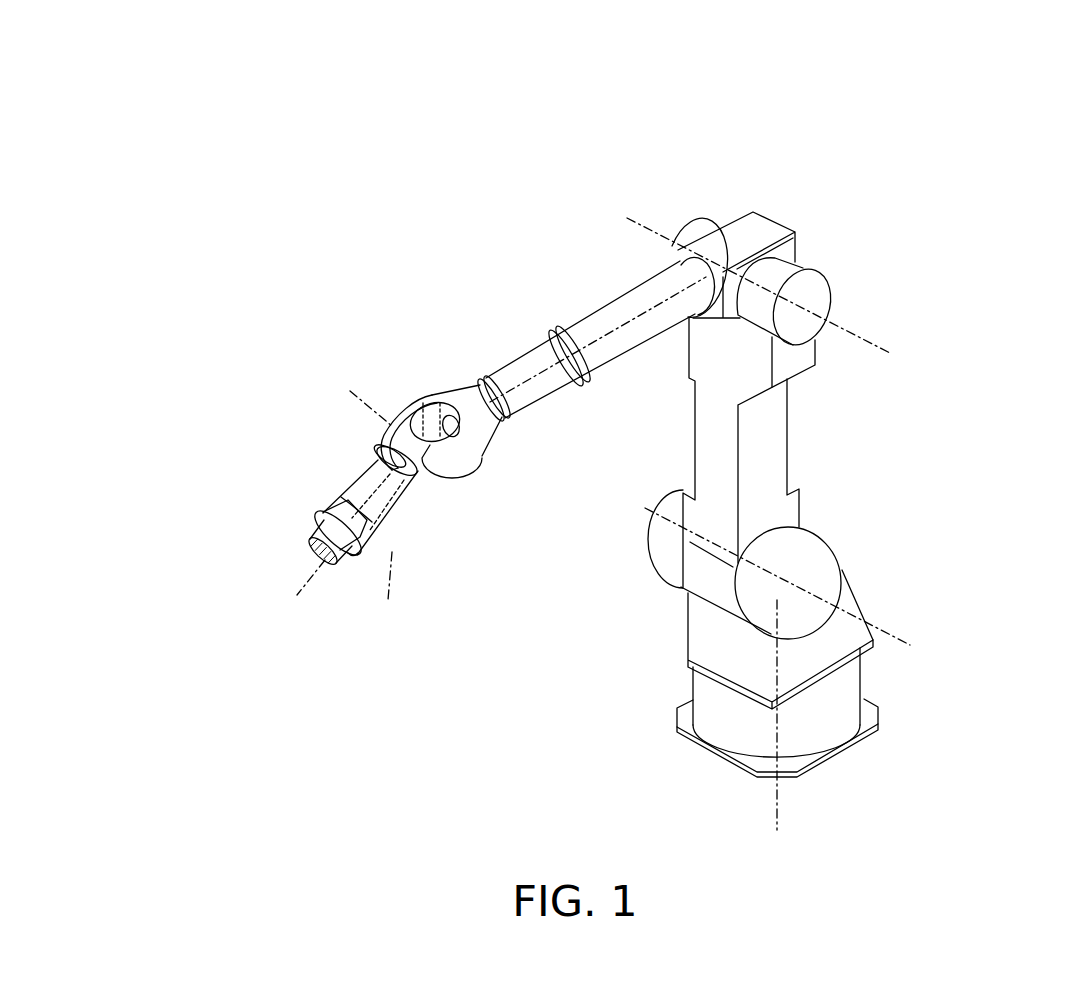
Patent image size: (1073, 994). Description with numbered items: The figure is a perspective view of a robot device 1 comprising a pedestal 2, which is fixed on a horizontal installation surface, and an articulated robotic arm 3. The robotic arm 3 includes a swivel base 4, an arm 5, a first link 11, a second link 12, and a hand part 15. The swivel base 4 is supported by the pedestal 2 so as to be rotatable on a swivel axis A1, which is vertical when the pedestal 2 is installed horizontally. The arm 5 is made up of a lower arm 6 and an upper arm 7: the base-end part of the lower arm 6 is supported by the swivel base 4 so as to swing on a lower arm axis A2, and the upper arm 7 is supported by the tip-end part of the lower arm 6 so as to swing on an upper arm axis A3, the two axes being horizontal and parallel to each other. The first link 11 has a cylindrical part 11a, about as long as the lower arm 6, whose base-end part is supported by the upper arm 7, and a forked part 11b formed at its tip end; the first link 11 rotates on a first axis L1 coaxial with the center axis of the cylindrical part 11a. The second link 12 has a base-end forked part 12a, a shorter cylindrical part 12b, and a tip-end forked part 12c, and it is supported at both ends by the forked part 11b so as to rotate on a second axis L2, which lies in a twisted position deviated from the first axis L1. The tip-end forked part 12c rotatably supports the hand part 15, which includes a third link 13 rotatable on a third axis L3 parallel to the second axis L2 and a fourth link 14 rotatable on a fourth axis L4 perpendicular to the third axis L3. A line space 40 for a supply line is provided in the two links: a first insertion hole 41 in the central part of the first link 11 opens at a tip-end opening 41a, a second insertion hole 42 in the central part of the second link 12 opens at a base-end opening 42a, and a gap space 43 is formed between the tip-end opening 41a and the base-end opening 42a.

The robot device 1 is at (586, 447).
The pedestal 2 is at (858, 745).
The articulated robotic arm 3 is at (586, 405).
The swivel base 4 is at (852, 592).
The arm 5 is at (847, 399).
The lower arm 6 is at (783, 455).
The upper arm 7 is at (800, 248).
The first link 11 is at (569, 385).
The cylindrical part 11a is at (550, 355).
The forked part 11b is at (473, 462).
The second link 12 is at (385, 499).
The base-end forked part 12a is at (447, 480).
The cylindrical part 12b is at (372, 462).
The tip-end forked part 12c is at (352, 560).
The third link 13 is at (323, 540).
The fourth link 14 is at (278, 561).
The hand part 15 is at (251, 538).
The line space 40 is at (452, 369).
The first insertion hole 41 is at (520, 400).
The tip-end opening 41a is at (451, 414).
The second insertion hole 42 is at (350, 485).
The base-end opening 42a is at (358, 534).
The gap space 43 is at (425, 403).
The first axis L1 is at (613, 328).
The second axis L2 is at (360, 393).
The third axis L3 is at (394, 594).
The fourth axis L4 is at (312, 607).
The swivel axis A1 is at (783, 801).
The lower arm axis A2 is at (905, 642).
The upper arm axis A3 is at (845, 333).